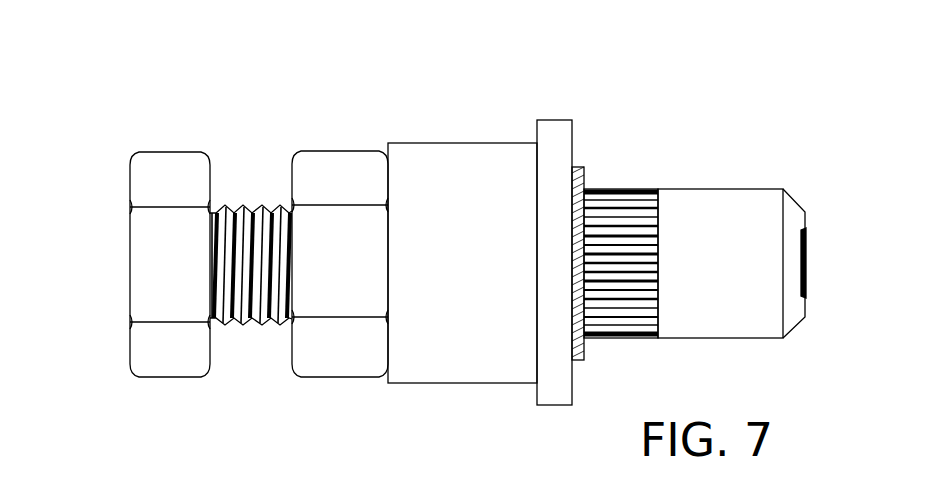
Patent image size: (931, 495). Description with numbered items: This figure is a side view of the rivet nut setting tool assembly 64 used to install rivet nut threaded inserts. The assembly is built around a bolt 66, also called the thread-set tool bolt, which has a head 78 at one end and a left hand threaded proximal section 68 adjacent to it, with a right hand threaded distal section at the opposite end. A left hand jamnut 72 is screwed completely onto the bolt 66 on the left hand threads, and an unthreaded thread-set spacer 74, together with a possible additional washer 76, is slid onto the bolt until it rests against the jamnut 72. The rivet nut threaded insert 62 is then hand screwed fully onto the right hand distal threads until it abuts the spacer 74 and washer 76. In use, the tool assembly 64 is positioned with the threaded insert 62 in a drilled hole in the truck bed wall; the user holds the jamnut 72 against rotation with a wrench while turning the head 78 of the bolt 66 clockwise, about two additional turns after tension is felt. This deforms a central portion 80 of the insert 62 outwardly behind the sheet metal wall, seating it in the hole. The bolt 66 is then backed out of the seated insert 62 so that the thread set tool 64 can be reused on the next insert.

The rivet nut threaded insert 62 is at (725, 213).
The rivet nut setting tool assembly 64 is at (271, 78).
The bolt 66 is at (169, 122).
The left hand threaded proximal section 68 is at (245, 207).
The left hand jamnut 72 is at (322, 168).
The thread-set spacer 74 is at (443, 177).
The washer 76 is at (557, 158).
The head 78 is at (143, 260).
The central portion 80 is at (617, 190).